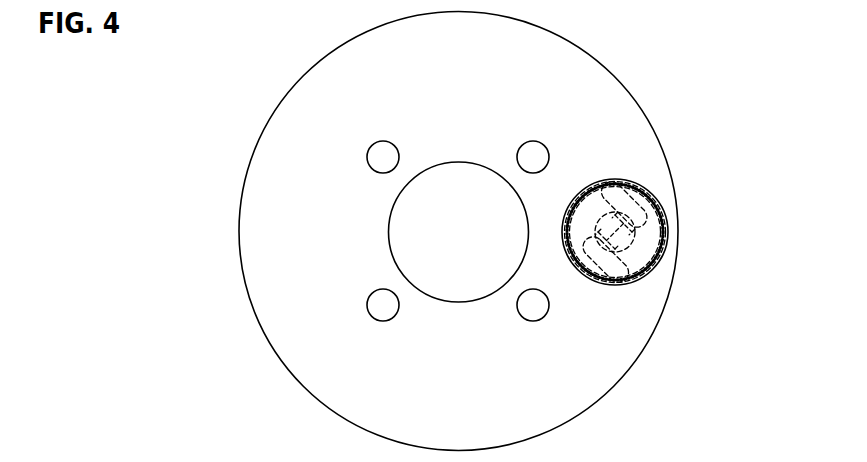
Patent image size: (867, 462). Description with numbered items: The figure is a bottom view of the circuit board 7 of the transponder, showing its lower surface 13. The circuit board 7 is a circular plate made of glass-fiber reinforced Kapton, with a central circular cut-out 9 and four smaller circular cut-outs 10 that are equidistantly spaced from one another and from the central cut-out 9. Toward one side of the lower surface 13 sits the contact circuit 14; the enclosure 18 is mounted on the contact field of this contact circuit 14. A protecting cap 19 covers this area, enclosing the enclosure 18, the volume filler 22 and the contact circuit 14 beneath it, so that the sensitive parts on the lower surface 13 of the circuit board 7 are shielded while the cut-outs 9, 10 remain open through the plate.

The circuit board 7 is at (668, 43).
The central circular cut-out 9 is at (487, 151).
The smaller circular cut-outs 10 is at (347, 231).
The lower surface 13 is at (639, 107).
The contact circuit 14 is at (633, 238).
The enclosure 18 is at (617, 222).
The protecting cap 19 is at (666, 199).
The volume filler 22 is at (665, 241).